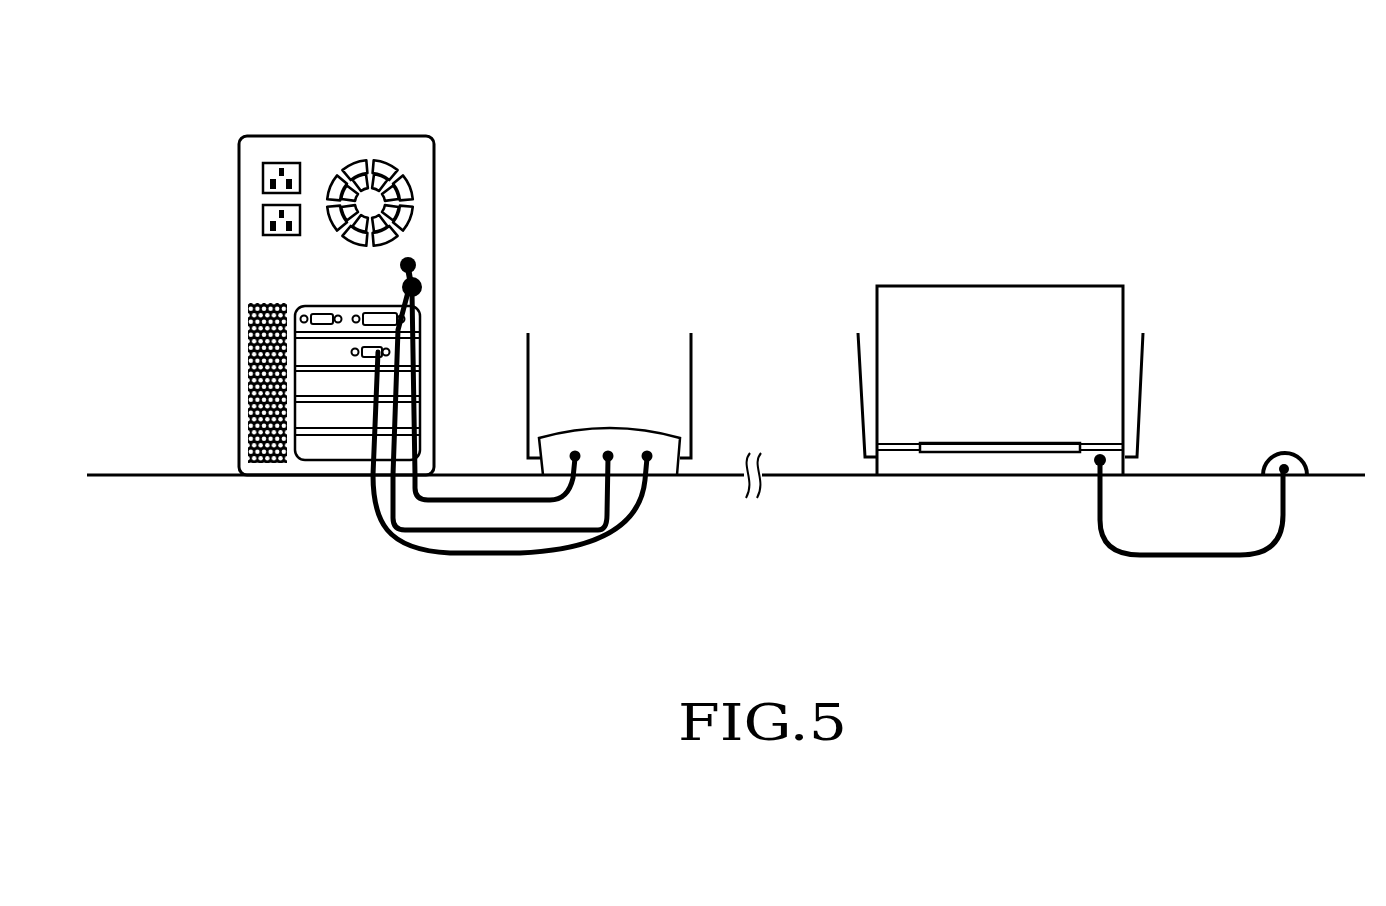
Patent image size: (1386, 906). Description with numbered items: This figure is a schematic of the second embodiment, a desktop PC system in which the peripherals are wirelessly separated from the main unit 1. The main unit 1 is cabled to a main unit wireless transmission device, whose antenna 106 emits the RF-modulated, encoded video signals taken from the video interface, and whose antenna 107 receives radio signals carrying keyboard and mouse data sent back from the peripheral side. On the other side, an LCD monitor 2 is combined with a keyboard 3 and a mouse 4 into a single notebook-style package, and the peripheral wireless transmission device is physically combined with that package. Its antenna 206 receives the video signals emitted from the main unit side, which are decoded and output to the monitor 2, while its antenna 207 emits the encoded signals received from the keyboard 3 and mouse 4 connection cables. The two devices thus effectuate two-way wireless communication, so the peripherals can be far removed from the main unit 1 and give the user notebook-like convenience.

The main unit 1 is at (344, 146).
The monitor 2 is at (958, 300).
The keyboard 3 is at (915, 464).
The mouse 4 is at (1298, 458).
The antenna 106 is at (528, 345).
The antenna 107 is at (697, 345).
The antenna 206 is at (862, 419).
The antenna 207 is at (1143, 379).